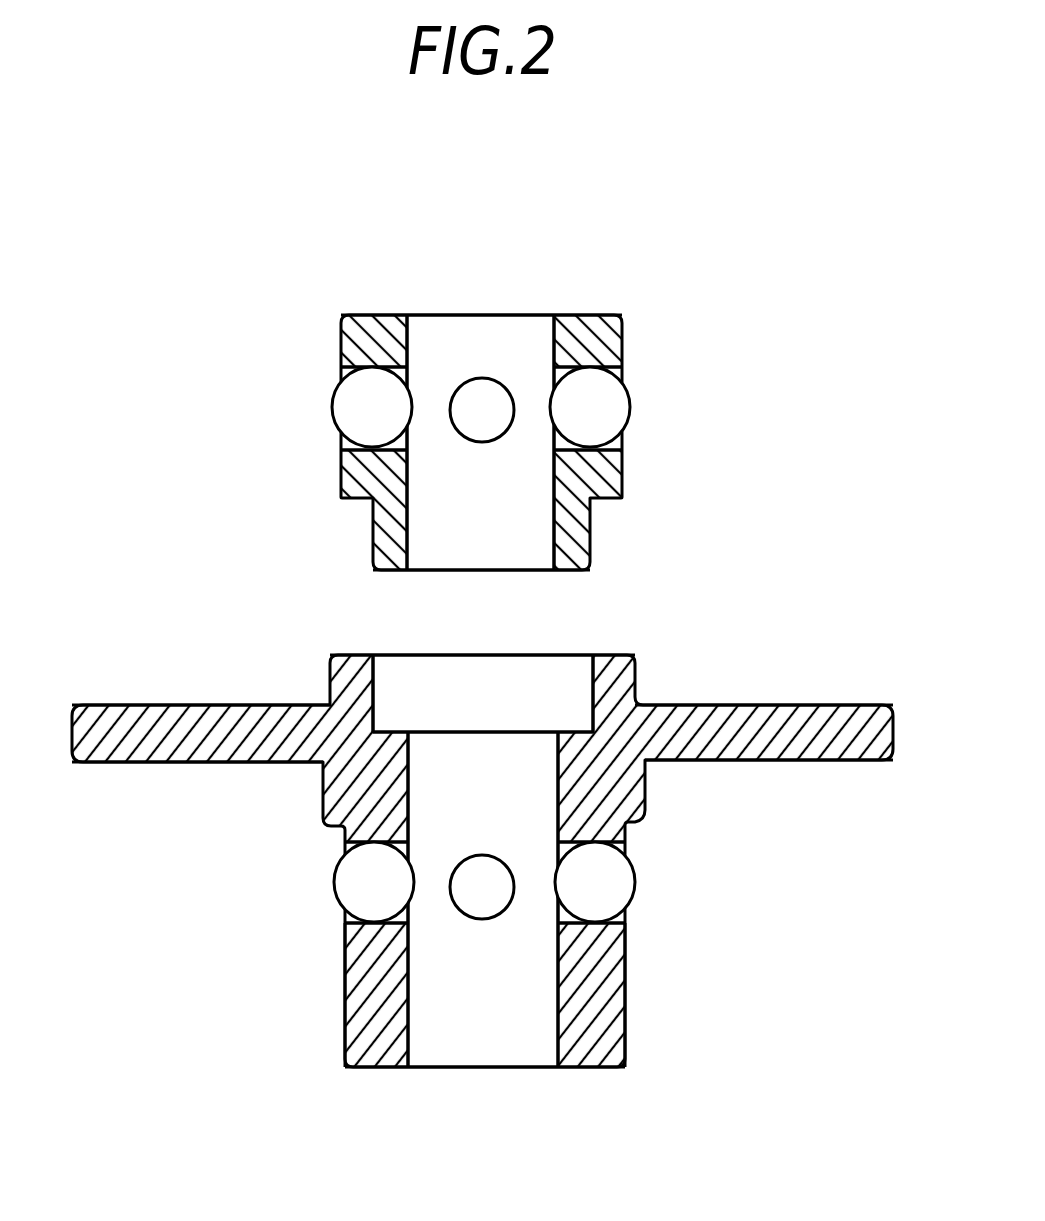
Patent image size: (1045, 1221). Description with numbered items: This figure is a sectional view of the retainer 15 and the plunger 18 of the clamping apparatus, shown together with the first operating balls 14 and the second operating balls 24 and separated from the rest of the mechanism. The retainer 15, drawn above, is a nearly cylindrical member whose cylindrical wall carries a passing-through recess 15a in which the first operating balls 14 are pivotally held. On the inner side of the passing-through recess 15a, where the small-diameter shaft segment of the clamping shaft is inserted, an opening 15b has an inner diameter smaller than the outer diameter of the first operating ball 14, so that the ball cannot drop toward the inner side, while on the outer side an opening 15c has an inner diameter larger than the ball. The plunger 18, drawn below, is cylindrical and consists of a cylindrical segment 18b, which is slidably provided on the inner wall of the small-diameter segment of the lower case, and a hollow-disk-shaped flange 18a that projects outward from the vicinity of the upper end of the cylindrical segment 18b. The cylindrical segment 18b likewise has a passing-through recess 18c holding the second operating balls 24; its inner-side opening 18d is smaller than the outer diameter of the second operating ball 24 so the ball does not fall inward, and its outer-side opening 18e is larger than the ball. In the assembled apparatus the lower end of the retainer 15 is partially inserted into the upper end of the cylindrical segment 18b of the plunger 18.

The retainer 15 is at (485, 383).
The passing-through recess 15a is at (633, 377).
The opening 15b is at (553, 377).
The opening 15c is at (623, 442).
The first operating ball 14 is at (613, 405).
The plunger 18 is at (482, 803).
The flange 18a is at (782, 705).
The cylindrical segment 18b is at (633, 657).
The passing-through recess 18c is at (645, 888).
The opening 18d is at (553, 845).
The opening 18e is at (623, 918).
The second operating ball 24 is at (620, 872).